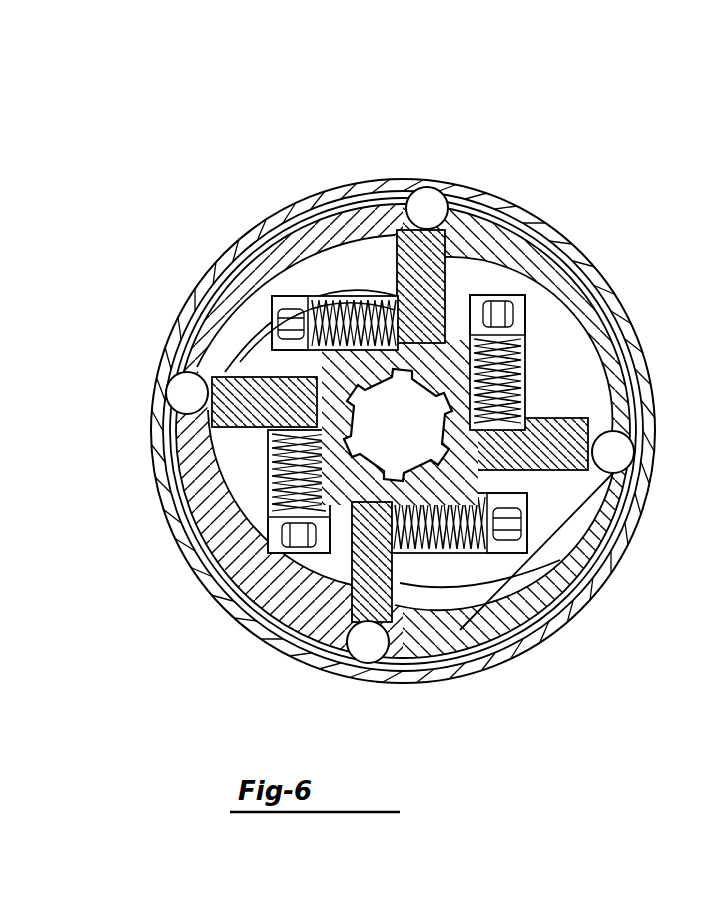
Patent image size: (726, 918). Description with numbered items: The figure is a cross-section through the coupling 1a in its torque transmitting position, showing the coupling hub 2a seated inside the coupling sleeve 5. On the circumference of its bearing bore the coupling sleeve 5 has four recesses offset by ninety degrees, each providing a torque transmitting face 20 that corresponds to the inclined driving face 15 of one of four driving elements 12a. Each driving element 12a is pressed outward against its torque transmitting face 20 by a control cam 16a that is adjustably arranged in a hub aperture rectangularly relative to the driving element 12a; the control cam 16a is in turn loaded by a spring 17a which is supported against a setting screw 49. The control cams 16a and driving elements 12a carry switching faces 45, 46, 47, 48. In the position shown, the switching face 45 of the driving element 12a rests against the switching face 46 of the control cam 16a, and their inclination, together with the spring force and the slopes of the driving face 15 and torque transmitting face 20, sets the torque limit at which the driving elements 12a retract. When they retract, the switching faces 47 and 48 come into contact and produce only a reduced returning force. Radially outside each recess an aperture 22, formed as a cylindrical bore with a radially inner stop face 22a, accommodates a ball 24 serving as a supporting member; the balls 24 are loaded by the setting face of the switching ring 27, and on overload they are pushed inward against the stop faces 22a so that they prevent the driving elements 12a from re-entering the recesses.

The coupling 1a is at (582, 134).
The coupling hub 2a is at (545, 585).
The coupling sleeve 5 is at (432, 406).
The driving element 12a is at (480, 248).
The driving face 15 is at (410, 650).
The control cam 16a is at (300, 220).
The spring 17a is at (250, 262).
The torque transmitting face 20 is at (392, 240).
The aperture 22 is at (445, 235).
The stop face 22a is at (472, 202).
The ball 24 is at (428, 200).
The switching ring 27 is at (268, 600).
The switching face 45 is at (580, 340).
The switching face 46 is at (560, 280).
The switching face 47 is at (400, 305).
The switching face 48 is at (645, 343).
The setting screw 49 is at (243, 590).